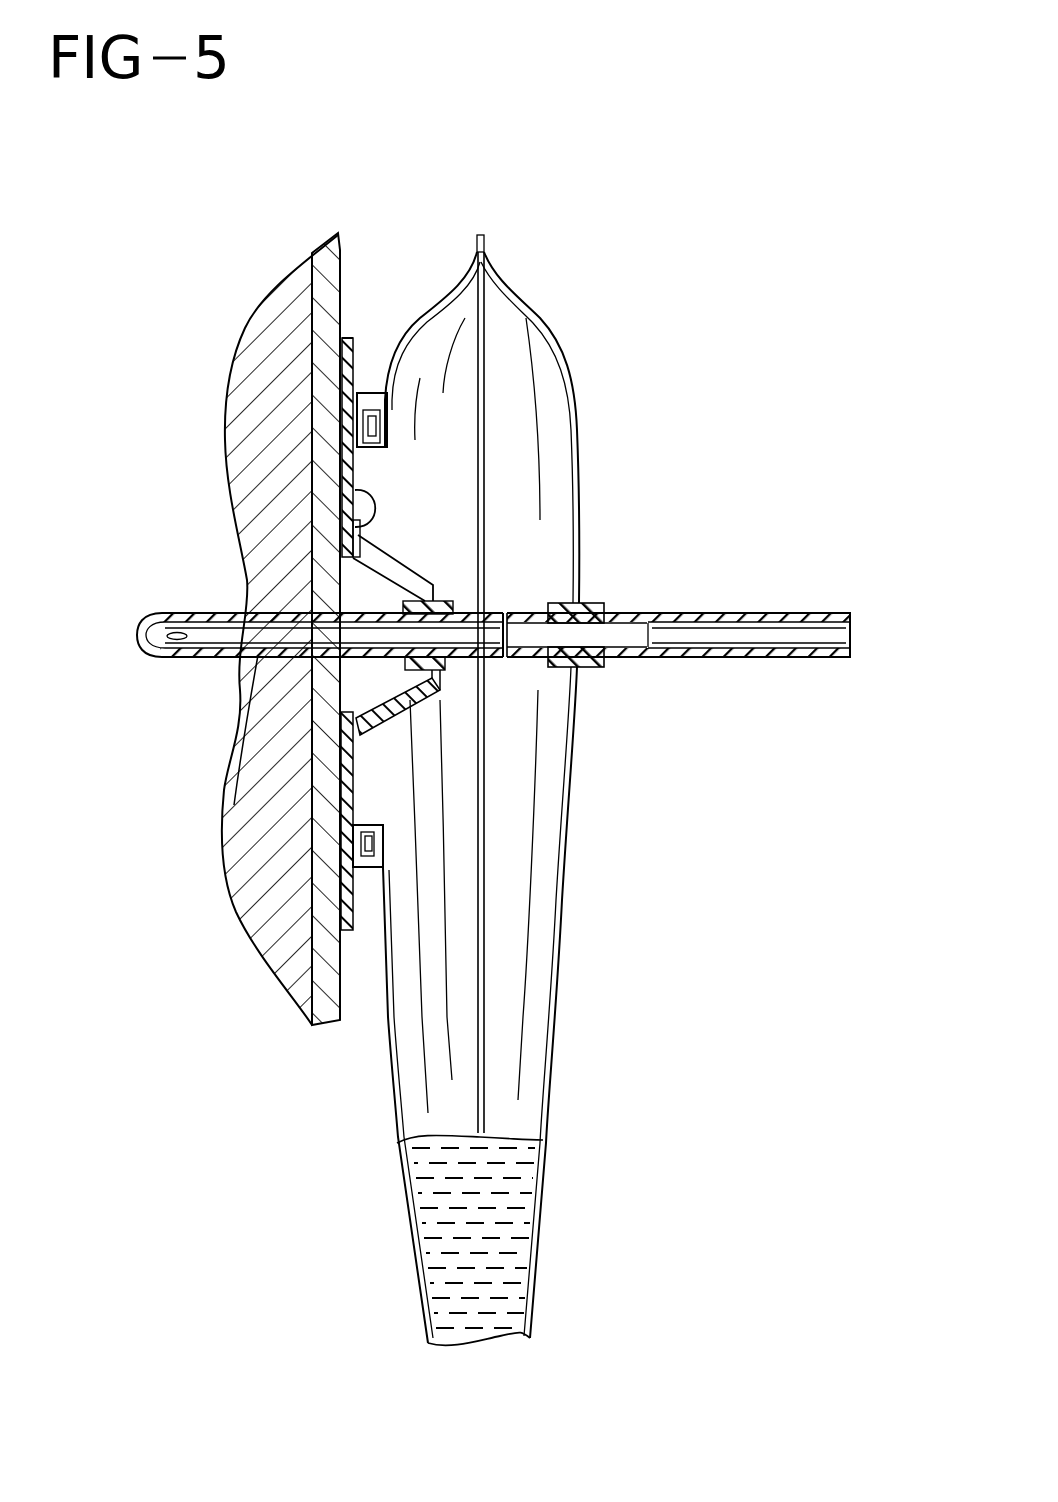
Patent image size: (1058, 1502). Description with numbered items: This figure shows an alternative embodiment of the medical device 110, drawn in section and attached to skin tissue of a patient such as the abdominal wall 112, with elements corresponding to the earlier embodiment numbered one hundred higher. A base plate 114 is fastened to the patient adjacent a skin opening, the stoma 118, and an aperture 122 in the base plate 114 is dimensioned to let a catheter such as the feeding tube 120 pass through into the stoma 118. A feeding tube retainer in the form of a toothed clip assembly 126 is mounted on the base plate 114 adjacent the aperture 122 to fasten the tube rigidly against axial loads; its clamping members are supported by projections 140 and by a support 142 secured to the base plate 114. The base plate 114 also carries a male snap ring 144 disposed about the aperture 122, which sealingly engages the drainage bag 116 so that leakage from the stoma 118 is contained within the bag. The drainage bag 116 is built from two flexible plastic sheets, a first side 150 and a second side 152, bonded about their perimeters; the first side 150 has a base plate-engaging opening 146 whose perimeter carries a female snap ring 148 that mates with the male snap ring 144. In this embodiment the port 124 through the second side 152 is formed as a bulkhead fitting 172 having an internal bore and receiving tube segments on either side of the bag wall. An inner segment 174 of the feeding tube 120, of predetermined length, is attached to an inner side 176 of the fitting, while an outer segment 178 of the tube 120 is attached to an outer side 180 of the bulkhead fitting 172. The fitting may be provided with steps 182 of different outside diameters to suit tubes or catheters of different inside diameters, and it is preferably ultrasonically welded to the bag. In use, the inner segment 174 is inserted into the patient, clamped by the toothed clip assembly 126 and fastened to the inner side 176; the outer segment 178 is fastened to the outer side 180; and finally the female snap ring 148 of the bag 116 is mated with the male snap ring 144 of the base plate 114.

The medical device 110 is at (727, 396).
The abdominal wall 112 is at (338, 238).
The base plate 114 is at (351, 318).
The drainage bag 116 is at (567, 310).
The stoma 118 is at (202, 684).
The feeding tube 120 is at (803, 613).
The aperture 122 is at (225, 760).
The port 124 is at (594, 596).
The toothed clip assembly 126 is at (410, 575).
The projections 140 is at (418, 594).
The support 142 is at (355, 490).
The male snap ring 144 is at (360, 412).
The base plate-engaging opening 146 is at (355, 467).
The female snap ring 148 is at (377, 410).
The first side 150 is at (400, 1143).
The second side 152 is at (547, 1128).
The bulkhead fitting 172 is at (604, 604).
The inner segment 174 is at (548, 668).
The inner side 176 is at (537, 603).
The outer segment 178 is at (835, 658).
The outer side 180 is at (594, 660).
The steps 182 is at (605, 663).